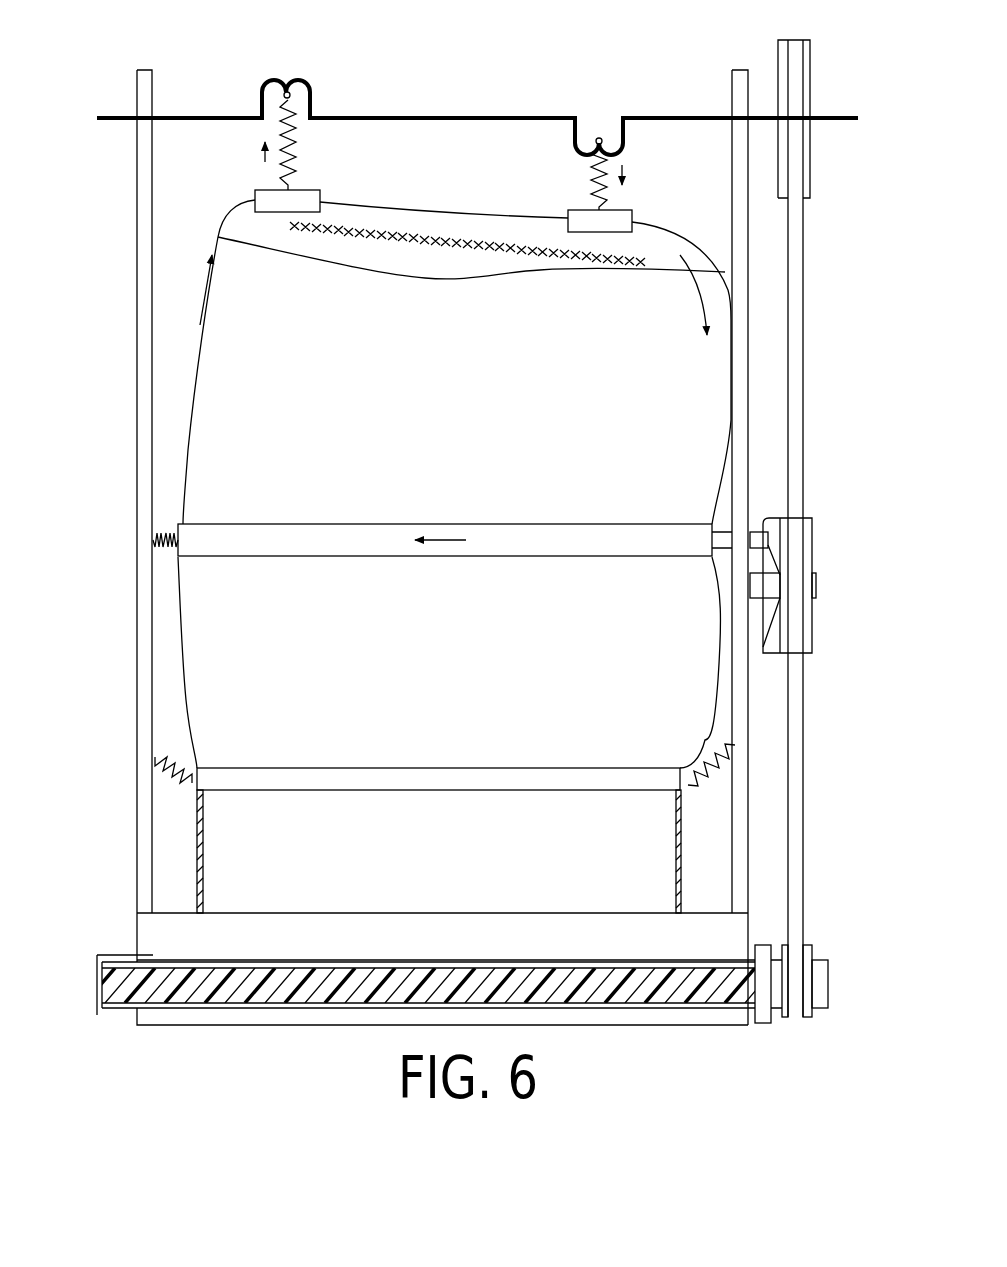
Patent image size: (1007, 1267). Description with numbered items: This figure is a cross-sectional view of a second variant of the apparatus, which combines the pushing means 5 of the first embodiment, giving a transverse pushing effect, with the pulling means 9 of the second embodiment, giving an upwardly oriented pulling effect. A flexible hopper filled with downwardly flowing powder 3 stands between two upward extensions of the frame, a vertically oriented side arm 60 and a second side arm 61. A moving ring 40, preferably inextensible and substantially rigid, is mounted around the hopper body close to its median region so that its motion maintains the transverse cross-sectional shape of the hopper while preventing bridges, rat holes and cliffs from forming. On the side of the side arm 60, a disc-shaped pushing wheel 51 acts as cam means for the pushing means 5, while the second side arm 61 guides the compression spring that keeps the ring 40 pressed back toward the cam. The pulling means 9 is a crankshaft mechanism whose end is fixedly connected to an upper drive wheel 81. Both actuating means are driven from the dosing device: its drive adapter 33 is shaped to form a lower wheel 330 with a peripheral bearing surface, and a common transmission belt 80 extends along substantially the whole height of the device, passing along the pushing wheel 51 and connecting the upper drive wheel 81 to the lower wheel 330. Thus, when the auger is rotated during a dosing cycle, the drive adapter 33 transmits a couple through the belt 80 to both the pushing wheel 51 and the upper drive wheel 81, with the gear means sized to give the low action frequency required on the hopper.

The powder 3 is at (255, 397).
The pushing means 5 is at (822, 528).
The pulling means 9 is at (392, 100).
The drive adapter 33 is at (808, 1025).
The moving ring 40 is at (242, 530).
The pushing wheel 51 is at (812, 645).
The side arm 60 is at (805, 868).
The second side arm 61 is at (138, 662).
The transmission belt 80 is at (805, 428).
The upper drive wheel 81 is at (812, 185).
The wheel 330 is at (785, 1022).